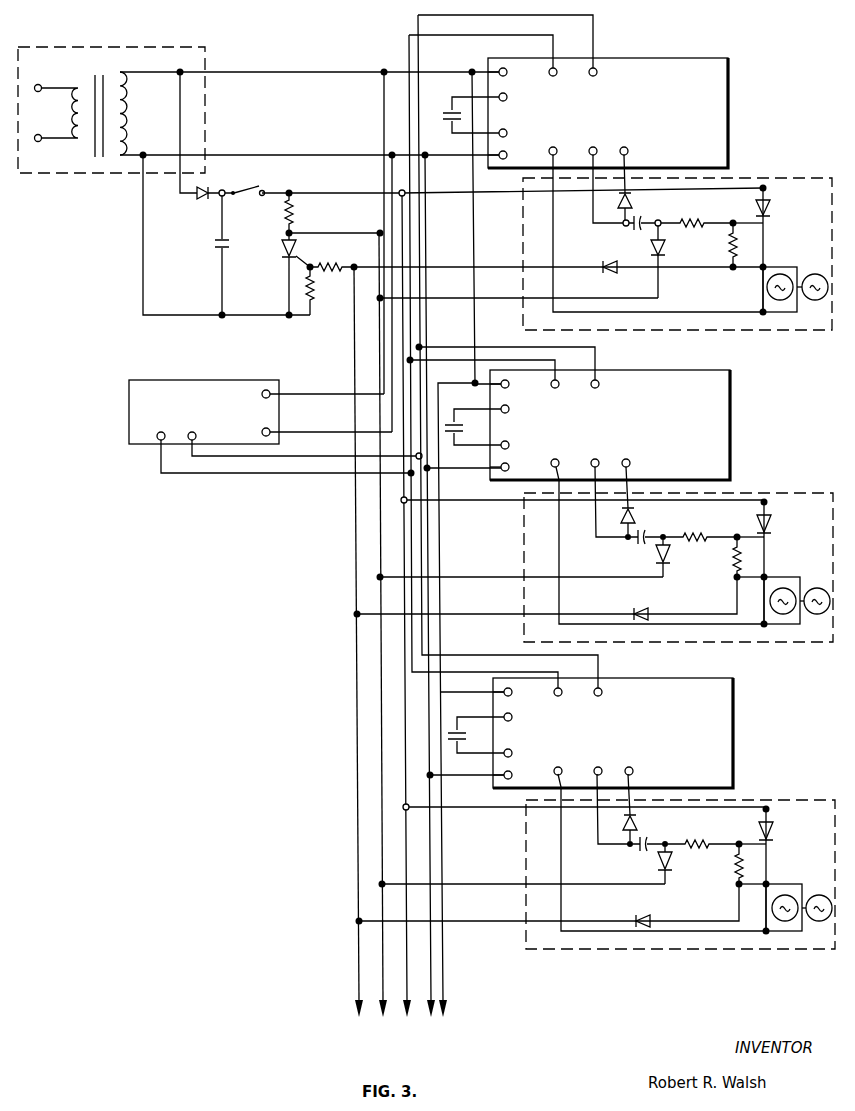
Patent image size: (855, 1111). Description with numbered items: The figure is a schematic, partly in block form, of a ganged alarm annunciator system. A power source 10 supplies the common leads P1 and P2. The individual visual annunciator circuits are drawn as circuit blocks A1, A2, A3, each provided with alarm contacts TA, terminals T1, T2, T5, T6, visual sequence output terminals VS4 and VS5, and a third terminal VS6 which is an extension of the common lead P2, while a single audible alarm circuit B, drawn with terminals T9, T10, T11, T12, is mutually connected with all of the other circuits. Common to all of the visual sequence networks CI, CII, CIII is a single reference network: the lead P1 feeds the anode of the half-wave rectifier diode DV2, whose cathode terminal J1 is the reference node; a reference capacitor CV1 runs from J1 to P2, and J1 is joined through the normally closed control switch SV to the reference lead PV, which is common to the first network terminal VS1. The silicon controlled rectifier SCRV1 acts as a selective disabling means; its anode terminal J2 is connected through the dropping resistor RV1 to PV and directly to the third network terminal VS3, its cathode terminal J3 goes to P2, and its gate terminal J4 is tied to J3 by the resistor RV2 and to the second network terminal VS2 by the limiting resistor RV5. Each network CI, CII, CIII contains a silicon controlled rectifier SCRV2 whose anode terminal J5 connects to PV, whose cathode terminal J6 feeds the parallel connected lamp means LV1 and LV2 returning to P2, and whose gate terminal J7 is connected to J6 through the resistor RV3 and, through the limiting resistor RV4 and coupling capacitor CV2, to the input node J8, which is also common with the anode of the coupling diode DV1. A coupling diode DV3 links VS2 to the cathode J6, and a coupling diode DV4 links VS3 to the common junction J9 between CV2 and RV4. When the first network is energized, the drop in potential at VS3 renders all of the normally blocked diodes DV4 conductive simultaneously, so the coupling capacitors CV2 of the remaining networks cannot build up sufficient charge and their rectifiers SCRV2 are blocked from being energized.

The power source 10 is at (70, 44).
The common lead P1 is at (181, 181).
The common lead P2 is at (143, 221).
The half-wave rectifier diode DV2 is at (201, 198).
The cathode terminal J1 is at (223, 189).
The normally closed control switch SV is at (246, 191).
The reference capacitor CV1 is at (226, 240).
The dropping resistor RV1 is at (293, 226).
The anode terminal J2 is at (286, 235).
The silicon controlled rectifier SCRV1 is at (282, 252).
The gate terminal J4 is at (311, 264).
The limiting resistor RV5 is at (332, 266).
The resistor RV2 is at (304, 290).
The cathode terminal J3 is at (287, 318).
The first visual sequence network terminal VS1 is at (398, 194).
The second visual sequence network terminal VS2 is at (353, 272).
The third visual sequence network terminal VS3 is at (383, 233).
The visual sequence output terminal VS4 is at (594, 146).
The visual sequence output terminal VS5 is at (626, 146).
The third terminal VS6 is at (551, 146).
The audible alarm circuit B is at (205, 403).
The terminal T9 is at (310, 395).
The terminal T10 is at (311, 433).
The terminal T11 is at (278, 445).
The terminal T12 is at (299, 436).
The visual annunciator circuit block A1 is at (633, 107).
The visual annunciator circuit block A2 is at (650, 419).
The visual annunciator circuit block A3 is at (675, 731).
The terminal T1 is at (510, 383).
The terminal T2 is at (510, 466).
The terminal T5 is at (487, 375).
The terminal T6 is at (511, 365).
The alarm contacts TA is at (446, 116).
The reference lead PV is at (475, 196).
The visual sequence network CI is at (740, 332).
The visual sequence network CII is at (674, 642).
The visual sequence network CIII is at (680, 889).
The silicon controlled rectifier SCRV2 is at (770, 206).
The anode terminal J5 is at (762, 186).
The cathode terminal J6 is at (765, 265).
The gate terminal J7 is at (740, 226).
The input node J8 is at (622, 223).
The common junction J9 is at (656, 228).
The coupling capacitor CV2 is at (632, 232).
The resistor RV3 is at (730, 246).
The limiting resistor RV4 is at (690, 220).
The coupling diode DV1 is at (632, 202).
The coupling diode DV3 is at (612, 272).
The coupling diode DV4 is at (664, 256).
The lamp means LV1 is at (777, 290).
The lamp means LV2 is at (815, 301).